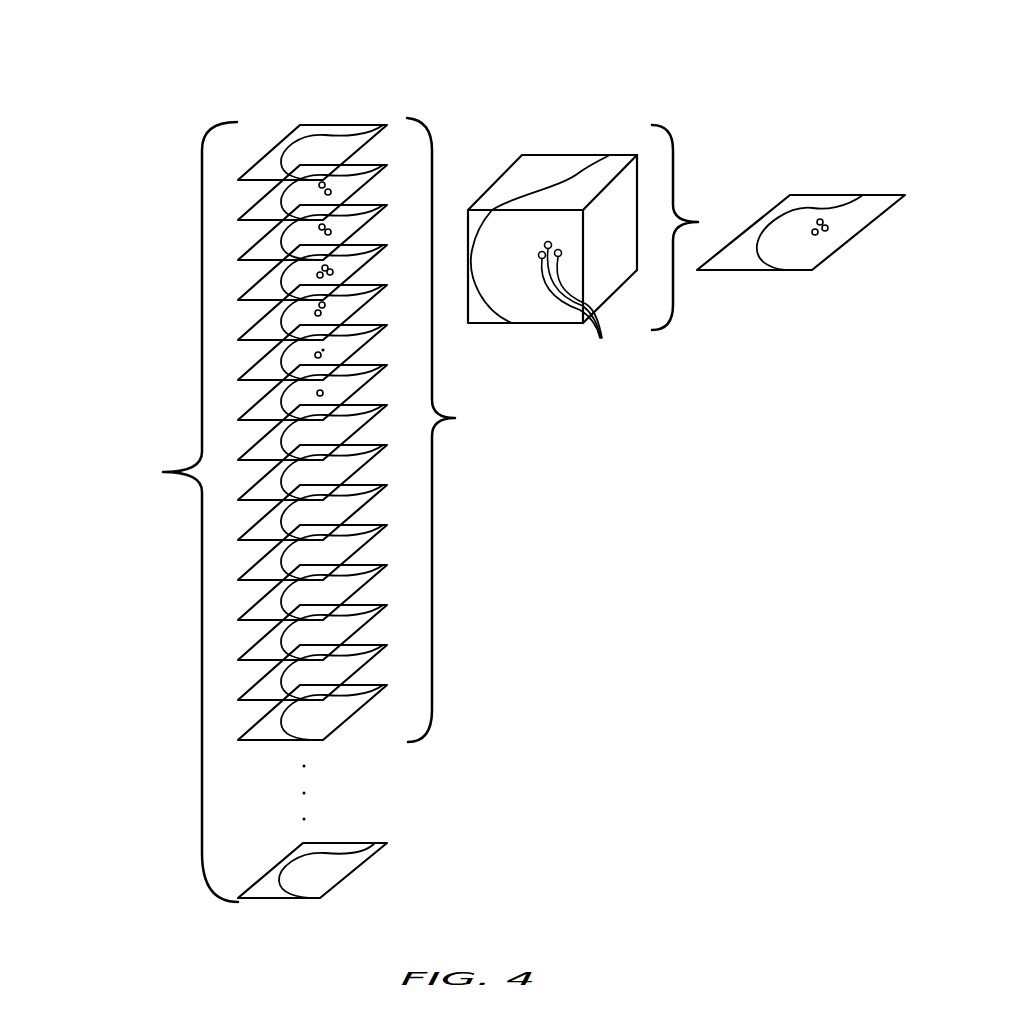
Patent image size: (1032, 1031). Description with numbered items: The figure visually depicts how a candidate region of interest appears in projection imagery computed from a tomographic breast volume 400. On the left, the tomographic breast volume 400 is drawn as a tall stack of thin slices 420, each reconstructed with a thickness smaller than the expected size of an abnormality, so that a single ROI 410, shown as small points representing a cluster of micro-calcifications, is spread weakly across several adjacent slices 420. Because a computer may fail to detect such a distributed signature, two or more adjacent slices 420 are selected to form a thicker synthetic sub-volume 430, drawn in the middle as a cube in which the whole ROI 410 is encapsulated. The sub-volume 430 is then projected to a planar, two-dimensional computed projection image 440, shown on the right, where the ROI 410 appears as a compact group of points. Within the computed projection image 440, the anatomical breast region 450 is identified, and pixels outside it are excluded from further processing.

The tomographic breast volume 400 is at (212, 459).
The ROI 410 is at (300, 130).
The slices 420 is at (317, 125).
The sub-volume 430 is at (540, 160).
The computed projection image 440 is at (833, 193).
The breast region 450 is at (785, 243).